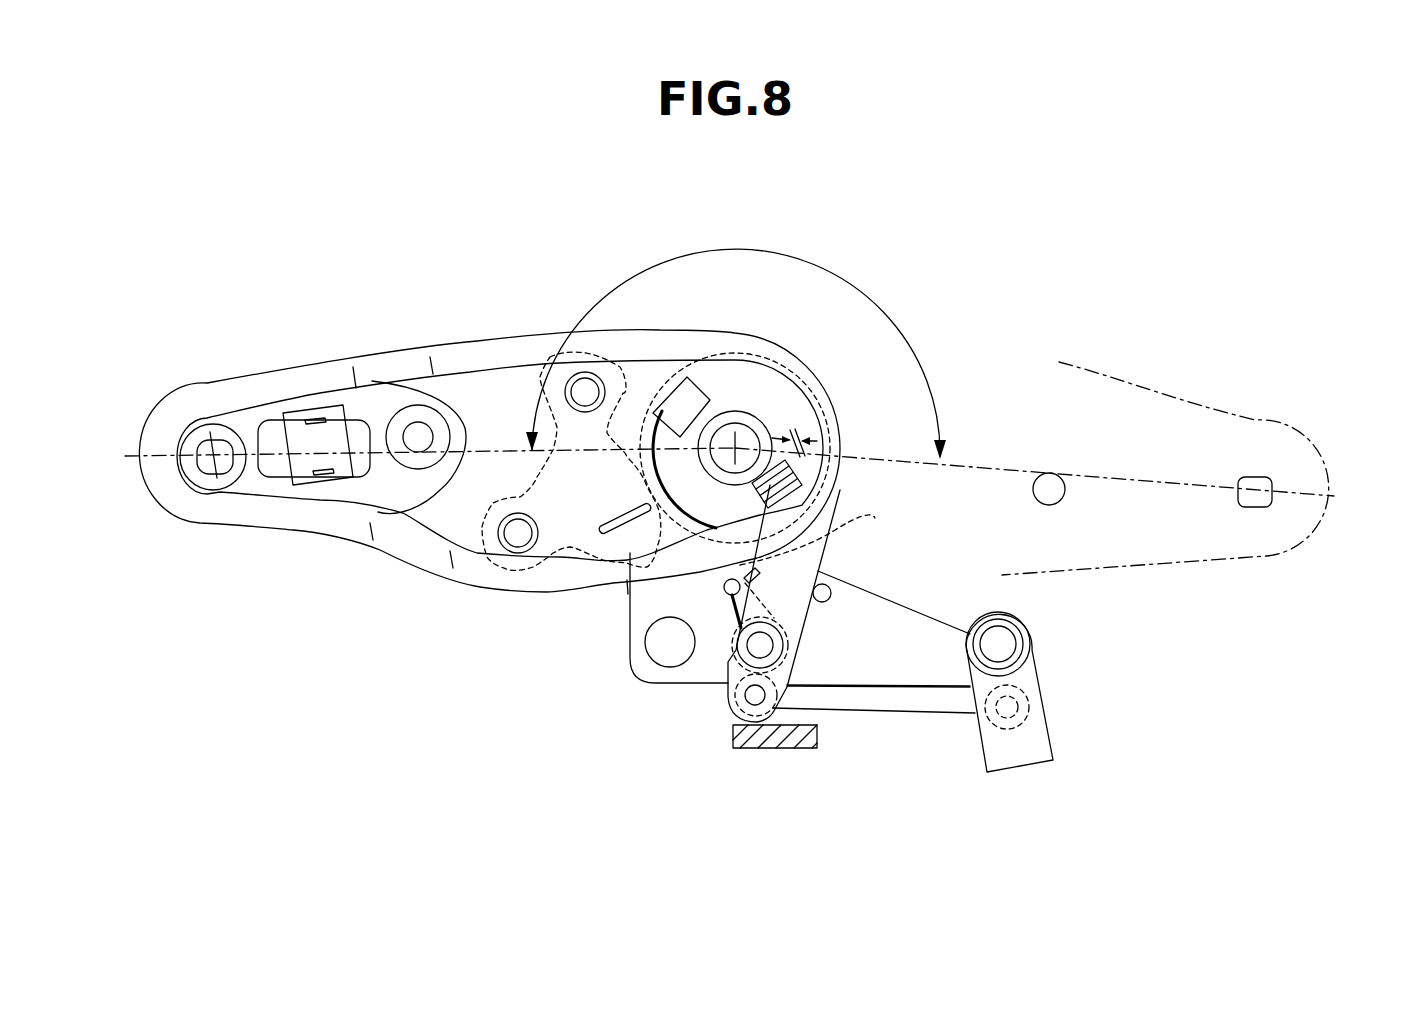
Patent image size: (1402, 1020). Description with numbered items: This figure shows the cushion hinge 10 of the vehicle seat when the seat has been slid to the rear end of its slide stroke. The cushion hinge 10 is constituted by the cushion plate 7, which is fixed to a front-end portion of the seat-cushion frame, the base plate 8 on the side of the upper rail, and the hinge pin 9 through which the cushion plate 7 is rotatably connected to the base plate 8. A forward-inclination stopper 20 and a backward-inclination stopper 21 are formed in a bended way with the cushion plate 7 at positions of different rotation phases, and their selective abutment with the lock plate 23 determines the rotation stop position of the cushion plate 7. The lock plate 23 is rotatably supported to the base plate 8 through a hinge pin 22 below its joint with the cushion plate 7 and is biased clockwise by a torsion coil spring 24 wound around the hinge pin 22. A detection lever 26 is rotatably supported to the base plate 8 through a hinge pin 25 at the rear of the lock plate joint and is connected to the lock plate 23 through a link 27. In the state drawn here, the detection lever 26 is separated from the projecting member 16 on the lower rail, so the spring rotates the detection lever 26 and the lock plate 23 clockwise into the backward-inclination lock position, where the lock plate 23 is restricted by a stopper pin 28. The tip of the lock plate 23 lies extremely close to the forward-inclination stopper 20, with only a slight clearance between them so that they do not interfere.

The cushion plate 7 is at (473, 362).
The base plate 8 is at (873, 662).
The hinge pin 9 is at (745, 433).
The cushion hinge 10 is at (566, 612).
The projecting member 16 is at (775, 750).
The forward-inclination stopper 20 is at (770, 495).
The backward-inclination stopper 21 is at (690, 405).
The hinge pin 22 is at (757, 643).
The lock plate 23 is at (808, 555).
The torsion coil spring 24 is at (727, 605).
The hinge pin 25 is at (1010, 652).
The detection lever 26 is at (1030, 742).
The link 27 is at (928, 700).
The stopper pin 28 is at (832, 592).